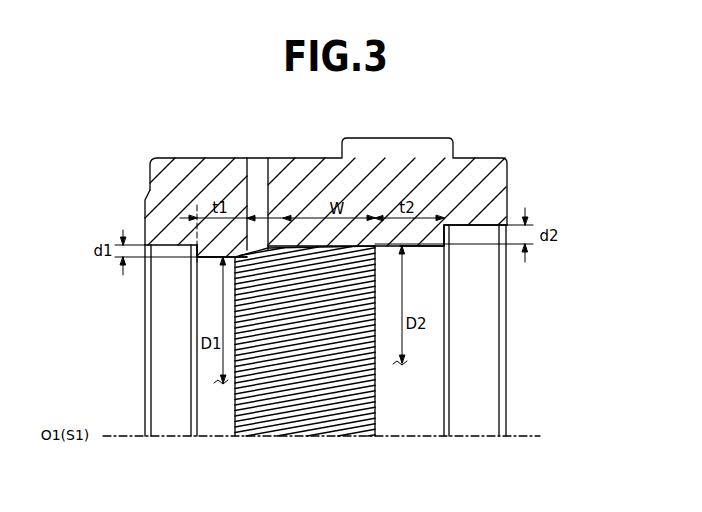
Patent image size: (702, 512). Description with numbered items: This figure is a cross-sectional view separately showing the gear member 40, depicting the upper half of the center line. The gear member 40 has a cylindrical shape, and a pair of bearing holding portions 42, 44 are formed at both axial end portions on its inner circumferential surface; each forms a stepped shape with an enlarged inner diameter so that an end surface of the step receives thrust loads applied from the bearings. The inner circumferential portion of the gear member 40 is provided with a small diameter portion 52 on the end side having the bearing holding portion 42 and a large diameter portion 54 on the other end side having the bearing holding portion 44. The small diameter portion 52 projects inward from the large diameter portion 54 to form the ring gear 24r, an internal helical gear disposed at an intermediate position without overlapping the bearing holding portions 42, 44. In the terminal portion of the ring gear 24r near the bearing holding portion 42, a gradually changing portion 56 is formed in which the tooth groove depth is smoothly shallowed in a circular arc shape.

The gear member 40 is at (207, 137).
The bearing holding portion 42 is at (164, 260).
The bearing holding portion 44 is at (478, 242).
The small diameter portion 52 is at (197, 259).
The large diameter portion 54 is at (444, 258).
The gradually changing portion 56 is at (269, 252).
The ring gear 24r is at (382, 400).